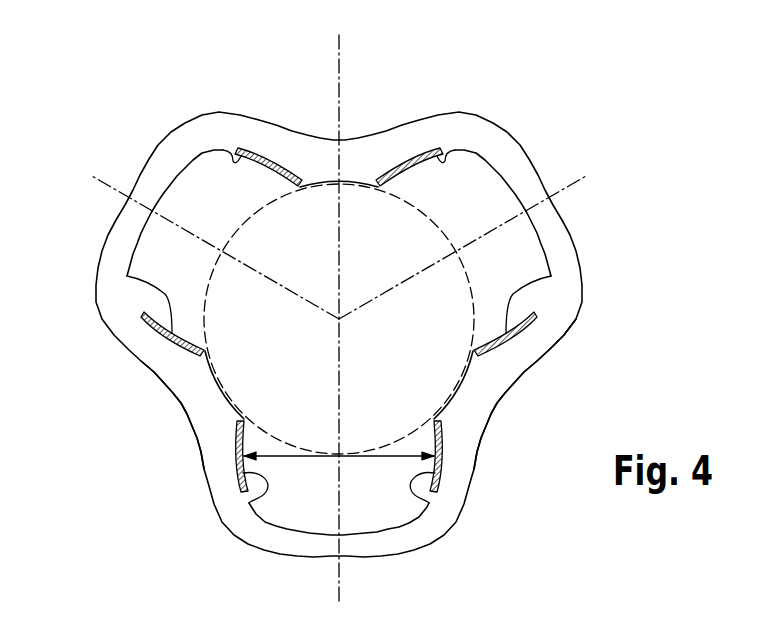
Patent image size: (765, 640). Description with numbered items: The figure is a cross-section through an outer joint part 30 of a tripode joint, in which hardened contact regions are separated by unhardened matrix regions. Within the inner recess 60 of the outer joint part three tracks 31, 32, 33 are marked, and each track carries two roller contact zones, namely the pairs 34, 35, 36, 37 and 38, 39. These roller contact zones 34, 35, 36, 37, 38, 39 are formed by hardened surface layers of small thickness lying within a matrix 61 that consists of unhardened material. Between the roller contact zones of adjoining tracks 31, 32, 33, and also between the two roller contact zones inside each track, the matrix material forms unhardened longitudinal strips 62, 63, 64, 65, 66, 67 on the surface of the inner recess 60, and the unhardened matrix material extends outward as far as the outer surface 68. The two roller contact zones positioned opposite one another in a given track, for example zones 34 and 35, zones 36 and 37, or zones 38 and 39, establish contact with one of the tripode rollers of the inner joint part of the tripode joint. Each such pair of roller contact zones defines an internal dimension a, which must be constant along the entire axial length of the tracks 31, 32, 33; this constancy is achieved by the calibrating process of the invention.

The holder / mounting assembly 30 is at (376, 120).
The track 31 is at (187, 200).
The track 32 is at (491, 202).
The track 33 is at (357, 508).
The roller contact zone 34 is at (223, 150).
The roller contact zone 35 is at (140, 313).
The roller contact zone 36 is at (537, 288).
The roller contact zone 37 is at (447, 158).
The roller contact zone 38 is at (267, 486).
The roller contact zone 39 is at (413, 490).
The inner recess 60 is at (404, 257).
The matrix 61 is at (500, 392).
The unhardened longitudinal strip 62 is at (323, 190).
The unhardened longitudinal strip 63 is at (452, 387).
The unhardened longitudinal strip 64 is at (227, 387).
The unhardened longitudinal strip 65 is at (143, 230).
The unhardened longitudinal strip 66 is at (533, 233).
The unhardened longitudinal strip 67 is at (297, 528).
The outer surface 68 is at (183, 408).
The internal dimension a is at (400, 458).